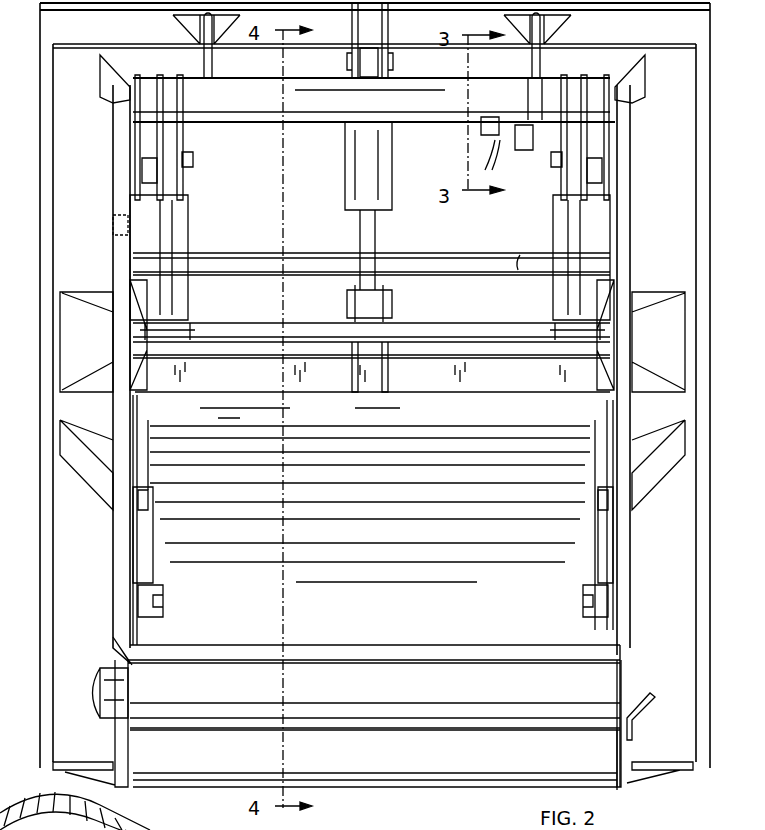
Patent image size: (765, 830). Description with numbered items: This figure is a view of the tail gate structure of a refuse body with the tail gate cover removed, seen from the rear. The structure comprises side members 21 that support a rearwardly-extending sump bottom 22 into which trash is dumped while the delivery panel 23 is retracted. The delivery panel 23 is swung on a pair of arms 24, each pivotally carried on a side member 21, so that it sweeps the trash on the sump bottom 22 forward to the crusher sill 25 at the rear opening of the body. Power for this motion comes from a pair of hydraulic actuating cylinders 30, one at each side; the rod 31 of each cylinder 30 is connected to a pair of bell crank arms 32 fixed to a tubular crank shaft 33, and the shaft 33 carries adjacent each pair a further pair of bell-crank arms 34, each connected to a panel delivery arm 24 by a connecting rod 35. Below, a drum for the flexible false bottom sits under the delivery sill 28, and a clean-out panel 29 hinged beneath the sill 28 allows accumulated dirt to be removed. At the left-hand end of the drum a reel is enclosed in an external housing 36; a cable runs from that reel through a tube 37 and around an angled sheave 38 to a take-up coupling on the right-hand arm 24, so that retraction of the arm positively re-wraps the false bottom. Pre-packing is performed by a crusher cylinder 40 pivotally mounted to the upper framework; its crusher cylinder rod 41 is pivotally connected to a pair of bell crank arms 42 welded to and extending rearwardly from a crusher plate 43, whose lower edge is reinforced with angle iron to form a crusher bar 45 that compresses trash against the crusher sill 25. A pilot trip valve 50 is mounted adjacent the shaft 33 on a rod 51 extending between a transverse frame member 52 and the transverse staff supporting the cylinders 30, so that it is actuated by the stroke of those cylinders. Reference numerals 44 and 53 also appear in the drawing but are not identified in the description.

The side member 21 is at (120, 600).
The sump bottom 22 is at (242, 612).
The delivery panel 23 is at (512, 660).
The arm 24 is at (148, 585).
The crusher sill 25 is at (432, 417).
The delivery sill 28 is at (398, 696).
The clean-out panel 29 is at (455, 766).
The hydraulic actuating cylinder 30 is at (165, 208).
The rod 31 is at (170, 185).
The bell crank arm 32 is at (180, 128).
The tubular crank shaft 33 is at (262, 108).
The bell-crank arm 34 is at (160, 105).
The connecting rod 35 is at (148, 548).
The external housing 36 is at (108, 720).
The tube 37 is at (120, 660).
The angled sheave 38 is at (115, 235).
The crusher cylinder 40 is at (378, 162).
The crusher cylinder rod 41 is at (370, 240).
The bell crank arm 42 is at (350, 362).
The crusher plate 43 is at (258, 316).
The rail 44 is at (272, 262).
The crusher bar 45 is at (495, 390).
The pilot trip valve 50 is at (506, 160).
The rod 51 is at (510, 262).
The transverse frame member 52 is at (668, 38).
The rail 53 is at (480, 338).